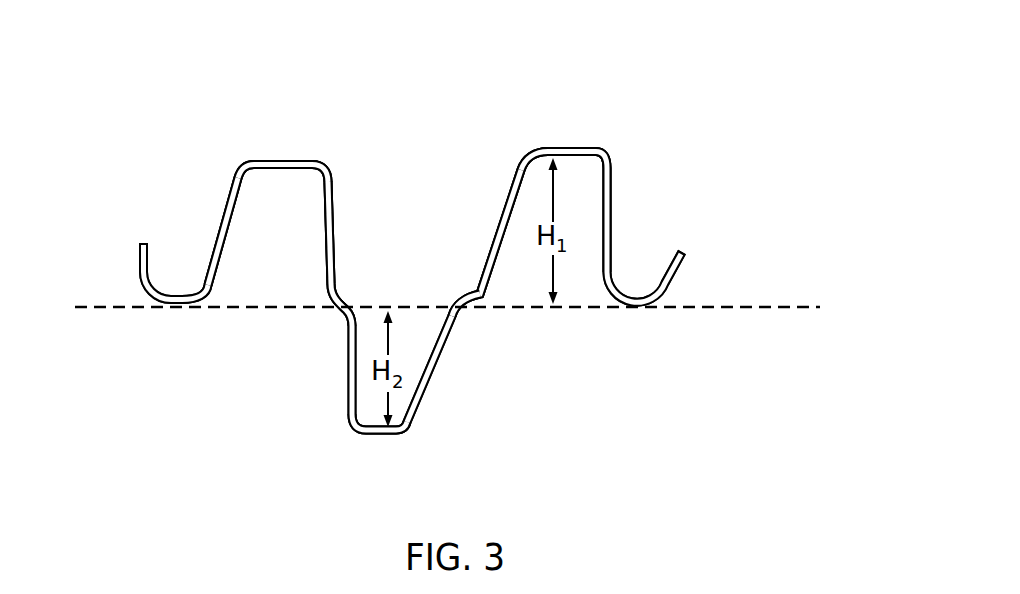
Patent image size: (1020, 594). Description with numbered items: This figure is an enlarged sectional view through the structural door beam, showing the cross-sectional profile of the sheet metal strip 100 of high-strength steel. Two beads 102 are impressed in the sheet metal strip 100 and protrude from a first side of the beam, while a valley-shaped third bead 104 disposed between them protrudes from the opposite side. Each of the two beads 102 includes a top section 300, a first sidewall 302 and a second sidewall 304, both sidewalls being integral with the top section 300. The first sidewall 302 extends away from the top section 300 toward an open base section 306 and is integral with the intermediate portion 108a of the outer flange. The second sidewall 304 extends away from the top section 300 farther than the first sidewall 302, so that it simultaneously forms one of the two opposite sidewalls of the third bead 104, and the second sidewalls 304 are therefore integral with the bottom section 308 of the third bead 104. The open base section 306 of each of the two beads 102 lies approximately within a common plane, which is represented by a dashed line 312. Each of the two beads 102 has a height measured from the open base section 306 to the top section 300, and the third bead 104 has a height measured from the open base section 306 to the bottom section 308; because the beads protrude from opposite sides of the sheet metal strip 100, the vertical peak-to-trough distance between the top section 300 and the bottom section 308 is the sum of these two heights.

The sheet metal strip 100 is at (759, 223).
The beads 102 is at (257, 135).
The third bead 104 is at (336, 455).
The intermediate portion 108a is at (187, 297).
The top section 300 is at (298, 161).
The first sidewall 302 is at (223, 221).
The second sidewall 304 is at (335, 257).
The open base section 306 is at (267, 310).
The bottom section 308 is at (400, 437).
The dashed line 312 is at (777, 310).